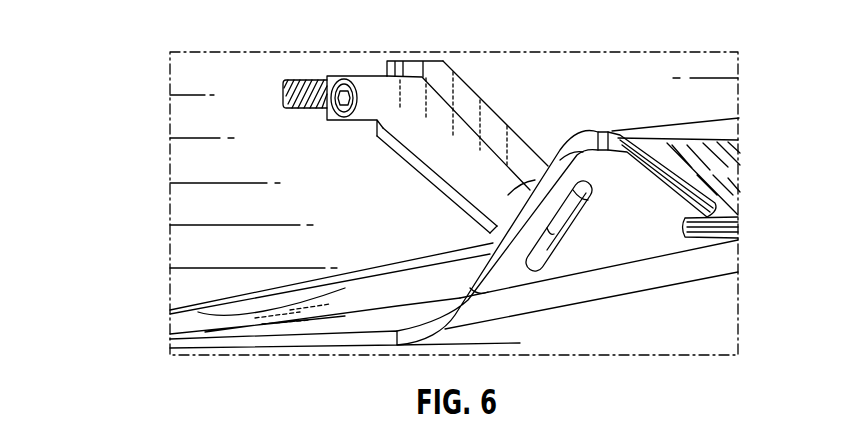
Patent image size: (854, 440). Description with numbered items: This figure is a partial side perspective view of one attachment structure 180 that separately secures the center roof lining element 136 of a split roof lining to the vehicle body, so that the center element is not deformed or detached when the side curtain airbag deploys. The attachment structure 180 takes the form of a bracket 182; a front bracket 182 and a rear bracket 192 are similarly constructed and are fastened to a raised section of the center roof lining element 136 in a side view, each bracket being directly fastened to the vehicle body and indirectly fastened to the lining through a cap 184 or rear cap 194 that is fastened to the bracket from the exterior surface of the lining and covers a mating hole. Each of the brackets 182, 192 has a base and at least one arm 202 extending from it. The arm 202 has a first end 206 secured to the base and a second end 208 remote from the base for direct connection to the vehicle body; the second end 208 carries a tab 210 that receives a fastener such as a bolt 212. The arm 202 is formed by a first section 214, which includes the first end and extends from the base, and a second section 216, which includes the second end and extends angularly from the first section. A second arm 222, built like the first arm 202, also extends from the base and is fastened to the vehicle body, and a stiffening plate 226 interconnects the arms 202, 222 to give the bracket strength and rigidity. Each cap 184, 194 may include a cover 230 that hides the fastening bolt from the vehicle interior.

The center roof lining element 136 is at (652, 277).
The attachment structure 180 is at (233, 176).
The bracket 182 is at (140, 140).
The rear bracket 192 is at (206, 130).
The cap 184 is at (568, 215).
The rear cap 194 is at (530, 264).
The arm 202 is at (423, 150).
The first end 206 is at (516, 175).
The second end 208 is at (363, 115).
The tab 210 is at (325, 108).
The bolt 212 is at (322, 80).
The first section 214 is at (495, 138).
The second section 216 is at (375, 76).
The second arm 222 is at (460, 92).
The stiffening plate 226 is at (460, 200).
The cover 230 is at (577, 213).